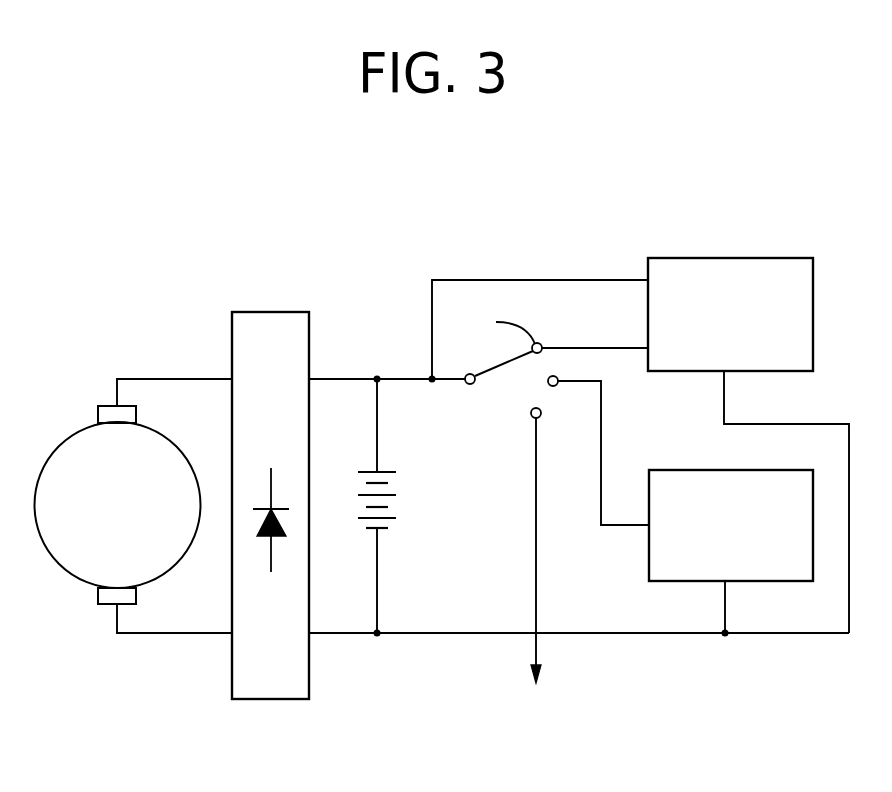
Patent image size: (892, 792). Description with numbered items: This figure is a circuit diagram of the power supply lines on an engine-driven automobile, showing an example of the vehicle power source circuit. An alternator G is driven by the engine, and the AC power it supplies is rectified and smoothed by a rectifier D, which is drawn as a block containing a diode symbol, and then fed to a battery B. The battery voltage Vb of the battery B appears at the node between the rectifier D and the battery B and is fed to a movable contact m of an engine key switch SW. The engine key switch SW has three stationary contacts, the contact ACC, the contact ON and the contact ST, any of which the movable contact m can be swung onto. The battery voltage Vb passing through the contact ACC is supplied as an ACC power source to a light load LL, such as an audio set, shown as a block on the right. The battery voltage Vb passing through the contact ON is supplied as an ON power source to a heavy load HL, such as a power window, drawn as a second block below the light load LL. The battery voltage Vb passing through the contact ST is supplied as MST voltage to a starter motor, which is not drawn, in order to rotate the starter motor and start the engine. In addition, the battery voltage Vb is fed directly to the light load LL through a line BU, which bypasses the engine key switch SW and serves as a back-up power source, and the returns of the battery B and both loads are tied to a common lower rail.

The alternator G is at (75, 437).
The rectifier D is at (279, 312).
The battery voltage Vb is at (377, 366).
The battery B is at (389, 500).
The line BU is at (522, 280).
The engine key switch SW is at (494, 382).
The movable contact m is at (498, 368).
The contact ACC is at (589, 335).
The contact ON is at (598, 440).
The contact ST is at (543, 566).
The light load LL is at (752, 258).
The heavy load HL is at (649, 565).